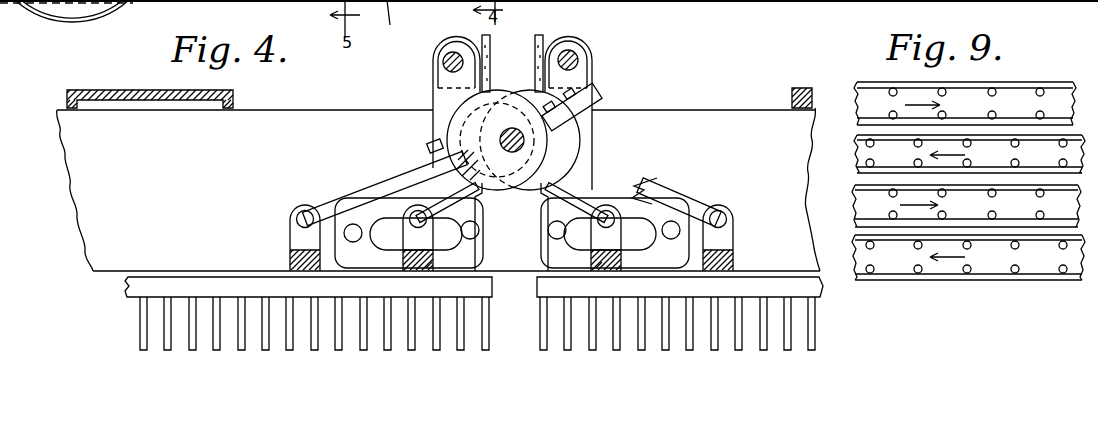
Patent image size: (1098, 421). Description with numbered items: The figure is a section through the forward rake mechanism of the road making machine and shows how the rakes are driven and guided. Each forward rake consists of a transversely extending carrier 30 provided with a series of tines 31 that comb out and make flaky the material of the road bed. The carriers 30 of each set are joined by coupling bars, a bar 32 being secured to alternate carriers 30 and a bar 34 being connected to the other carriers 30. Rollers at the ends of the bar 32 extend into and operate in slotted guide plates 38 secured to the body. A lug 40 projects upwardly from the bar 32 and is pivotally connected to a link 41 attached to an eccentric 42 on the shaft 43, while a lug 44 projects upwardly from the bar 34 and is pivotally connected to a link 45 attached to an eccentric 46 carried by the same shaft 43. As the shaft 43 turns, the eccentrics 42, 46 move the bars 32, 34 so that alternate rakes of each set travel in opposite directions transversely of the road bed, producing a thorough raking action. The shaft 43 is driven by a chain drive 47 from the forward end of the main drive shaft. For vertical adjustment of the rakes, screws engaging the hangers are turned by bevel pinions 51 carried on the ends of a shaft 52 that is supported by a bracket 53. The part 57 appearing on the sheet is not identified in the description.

In FIG. 4, the rake bar 30 is at (125, 288).
In FIG. 9, the rake bar 30 is at (857, 142).
In FIG. 4, the rake teeth 31 is at (141, 335).
In FIG. 9, the rake teeth 31 is at (1037, 116).
In FIG. 4, the bar mounting 32 is at (426, 268).
In FIG. 4, the bearing block 34 is at (288, 258).
In FIG. 4, the bracket 38 is at (633, 192).
In FIG. 4, the link 40 is at (405, 236).
In FIG. 4, the connecting rod 41 is at (434, 200).
In FIG. 4, the crosshead 42 is at (514, 188).
In FIG. 4, the crank pin 43 is at (512, 128).
In FIG. 4, the pivot pin 44 is at (288, 205).
In FIG. 4, the arm 45 is at (360, 190).
In FIG. 4, the clamp block 46 is at (563, 137).
In FIG. 4, the guide rod 47 is at (535, 44).
In FIG. 4, the yoke 51 is at (433, 62).
In FIG. 4, the pin 52 is at (447, 66).
In FIG. 4, the loop 53 is at (455, 44).
In FIG. 4, the lever 57 is at (777, 2).